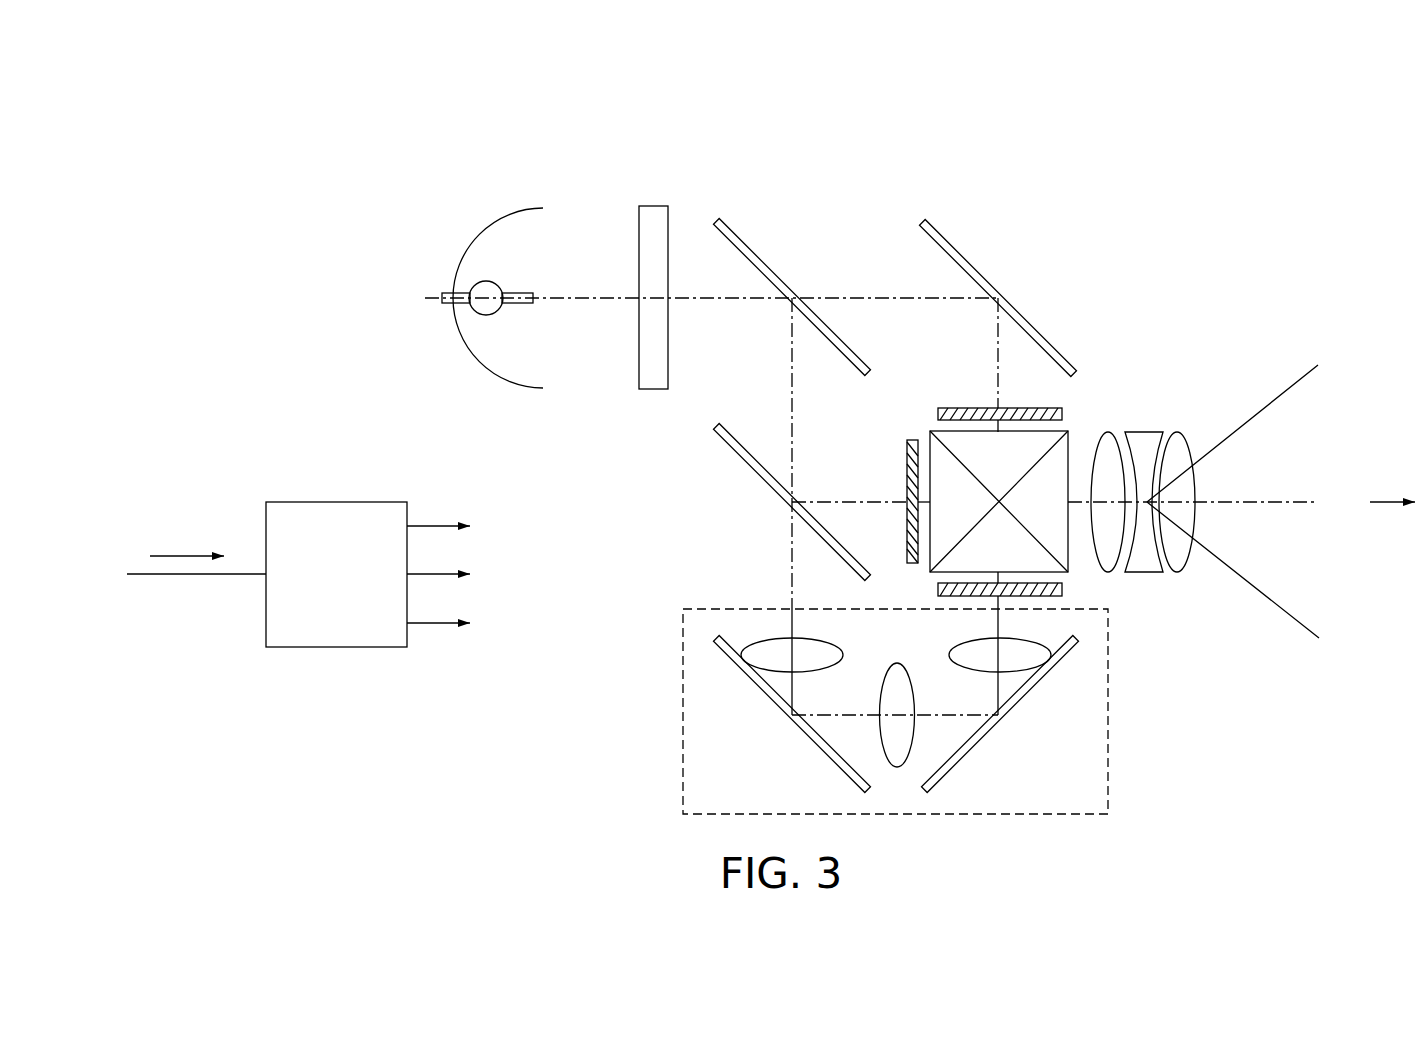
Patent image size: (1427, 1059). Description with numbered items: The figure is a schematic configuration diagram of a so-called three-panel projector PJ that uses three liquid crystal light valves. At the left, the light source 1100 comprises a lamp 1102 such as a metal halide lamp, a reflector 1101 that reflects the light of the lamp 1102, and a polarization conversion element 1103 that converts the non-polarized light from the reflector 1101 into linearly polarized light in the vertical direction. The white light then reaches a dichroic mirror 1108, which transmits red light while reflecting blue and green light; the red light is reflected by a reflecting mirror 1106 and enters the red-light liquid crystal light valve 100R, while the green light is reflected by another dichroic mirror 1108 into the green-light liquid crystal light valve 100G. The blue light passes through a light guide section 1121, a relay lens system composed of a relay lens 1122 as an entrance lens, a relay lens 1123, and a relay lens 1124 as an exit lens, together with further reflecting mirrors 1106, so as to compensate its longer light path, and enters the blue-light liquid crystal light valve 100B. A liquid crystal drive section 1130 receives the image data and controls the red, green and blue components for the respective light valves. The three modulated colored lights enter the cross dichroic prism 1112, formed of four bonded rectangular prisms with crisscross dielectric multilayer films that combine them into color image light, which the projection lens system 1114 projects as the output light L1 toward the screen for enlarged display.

The projector PJ is at (1282, 163).
The projection light L1 is at (1392, 485).
The light source 1100 is at (490, 183).
The reflector 1101 is at (474, 244).
The lamp 1102 is at (486, 315).
The polarization conversion element 1103 is at (655, 206).
The dichroic mirror 1108 is at (755, 252).
The reflecting mirror 1106 is at (962, 252).
The red-light liquid crystal light valve 100R is at (955, 405).
The green-light liquid crystal light valve 100G is at (907, 460).
The blue-light liquid crystal light valve 100B is at (1062, 588).
The cross dichroic prism 1112 is at (940, 429).
The projection lens system 1114 is at (1090, 418).
The light guide section 1121 is at (683, 709).
The relay lens 1122 is at (765, 647).
The relay lens 1123 is at (902, 743).
The relay lens 1124 is at (1035, 655).
The liquid crystal drive section 1130 is at (335, 500).